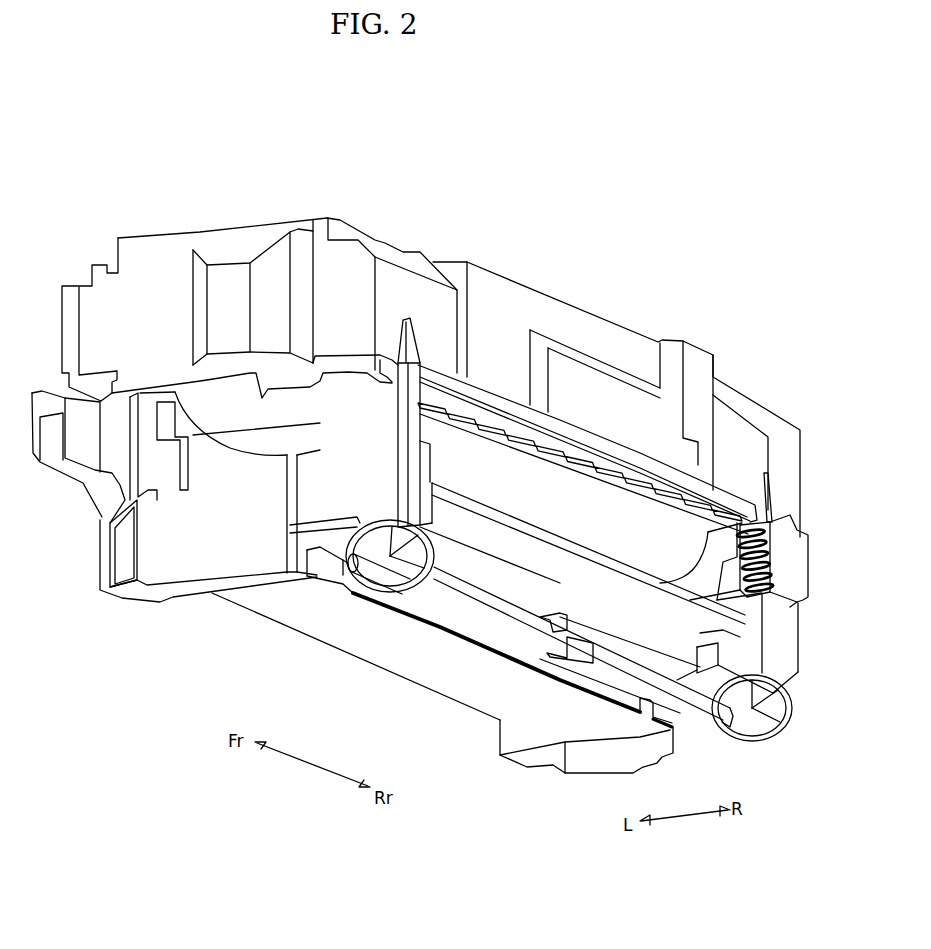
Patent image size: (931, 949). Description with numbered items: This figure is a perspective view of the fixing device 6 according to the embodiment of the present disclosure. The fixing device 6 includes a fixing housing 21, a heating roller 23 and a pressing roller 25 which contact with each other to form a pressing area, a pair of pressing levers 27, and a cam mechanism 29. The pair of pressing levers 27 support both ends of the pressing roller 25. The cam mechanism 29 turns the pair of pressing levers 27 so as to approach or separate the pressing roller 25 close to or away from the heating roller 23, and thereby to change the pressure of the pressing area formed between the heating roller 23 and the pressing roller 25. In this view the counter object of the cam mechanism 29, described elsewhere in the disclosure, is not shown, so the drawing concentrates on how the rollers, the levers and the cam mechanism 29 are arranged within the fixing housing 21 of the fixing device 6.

The fixing device 6 is at (294, 170).
The fixing housing 21 is at (176, 232).
The heating roller 23 is at (492, 358).
The pressing roller 25 is at (557, 488).
The pressing levers 27 is at (392, 338).
The cam mechanism 29 is at (502, 646).